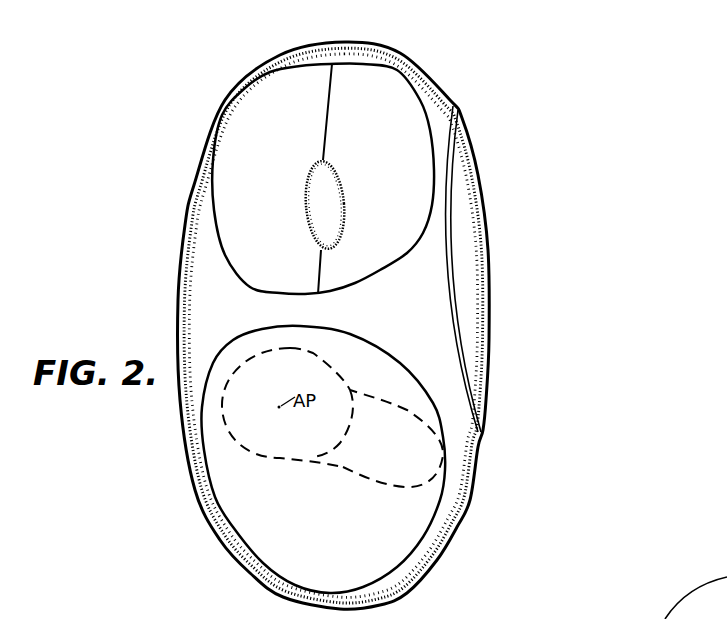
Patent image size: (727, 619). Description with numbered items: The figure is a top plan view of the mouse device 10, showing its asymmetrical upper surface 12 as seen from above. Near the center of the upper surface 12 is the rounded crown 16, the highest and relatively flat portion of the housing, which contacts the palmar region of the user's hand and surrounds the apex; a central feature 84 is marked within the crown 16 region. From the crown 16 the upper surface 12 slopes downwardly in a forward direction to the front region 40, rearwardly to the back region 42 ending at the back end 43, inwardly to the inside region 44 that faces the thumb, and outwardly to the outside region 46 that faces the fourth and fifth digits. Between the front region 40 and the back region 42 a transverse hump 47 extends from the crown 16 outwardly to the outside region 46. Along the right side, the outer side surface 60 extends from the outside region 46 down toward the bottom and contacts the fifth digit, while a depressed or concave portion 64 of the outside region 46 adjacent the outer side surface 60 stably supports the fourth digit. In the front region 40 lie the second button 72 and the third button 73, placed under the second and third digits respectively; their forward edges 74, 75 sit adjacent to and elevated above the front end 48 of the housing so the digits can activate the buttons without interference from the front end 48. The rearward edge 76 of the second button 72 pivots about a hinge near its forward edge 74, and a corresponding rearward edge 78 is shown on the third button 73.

The mouse device 10 is at (606, 84).
The upper surface 12 is at (378, 296).
The crown 16 is at (258, 436).
The front region 40 is at (315, 88).
The back region 42 is at (290, 538).
The back end 43 is at (342, 609).
The inside region 44 is at (210, 302).
The outside region 46 is at (433, 314).
The transverse hump 47 is at (374, 462).
The front end 48 is at (348, 46).
The outer side surface 60 is at (498, 228).
The depressed portion 64 is at (438, 212).
The second button 72 is at (290, 188).
The third button 73 is at (390, 188).
The forward edge of second button 74 is at (286, 90).
The forward edge of third button 75 is at (378, 82).
The rearward edge of second button 76 is at (264, 283).
The right lower wall 78 is at (354, 276).
The central oval port 84 is at (336, 209).